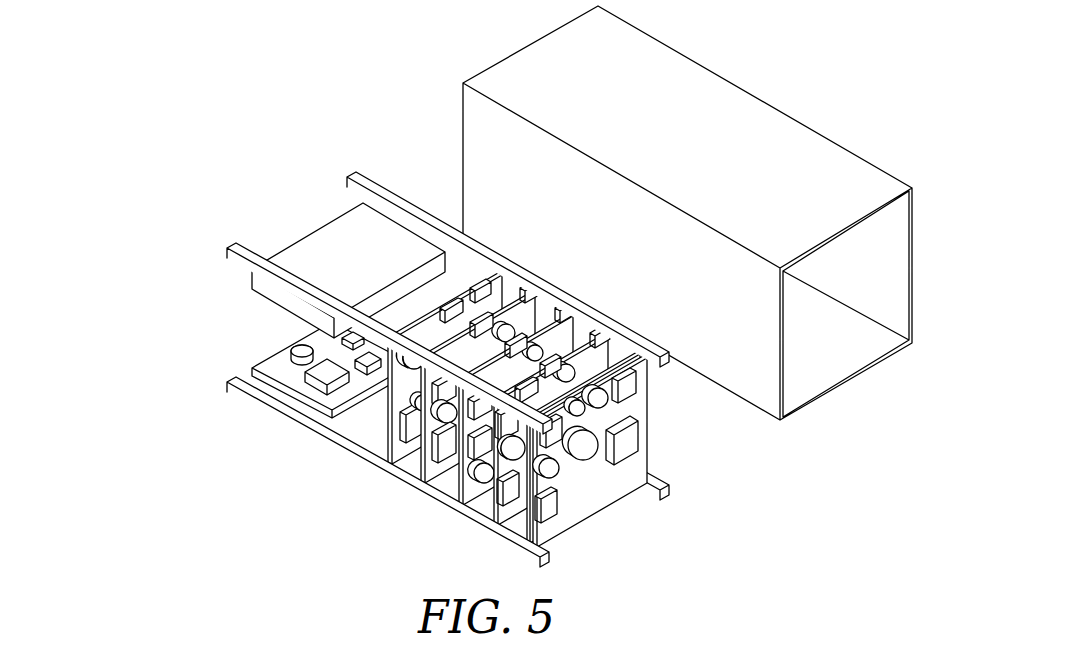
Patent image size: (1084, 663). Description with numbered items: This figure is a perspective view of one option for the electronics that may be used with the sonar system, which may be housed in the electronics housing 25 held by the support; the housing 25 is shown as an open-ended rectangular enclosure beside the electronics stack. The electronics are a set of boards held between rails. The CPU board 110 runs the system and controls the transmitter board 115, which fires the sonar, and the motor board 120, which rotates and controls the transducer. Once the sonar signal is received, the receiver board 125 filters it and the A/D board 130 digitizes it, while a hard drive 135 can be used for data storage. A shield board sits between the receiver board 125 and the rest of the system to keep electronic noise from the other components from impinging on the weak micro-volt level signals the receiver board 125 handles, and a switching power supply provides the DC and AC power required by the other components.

The electronics housing 25 is at (822, 368).
The CPU board 110 is at (425, 445).
The transmitter board 115 is at (462, 470).
The motor board 120 is at (277, 358).
The receiver board 125 is at (572, 515).
The A/D board 130 is at (522, 510).
The hard drive 135 is at (328, 248).